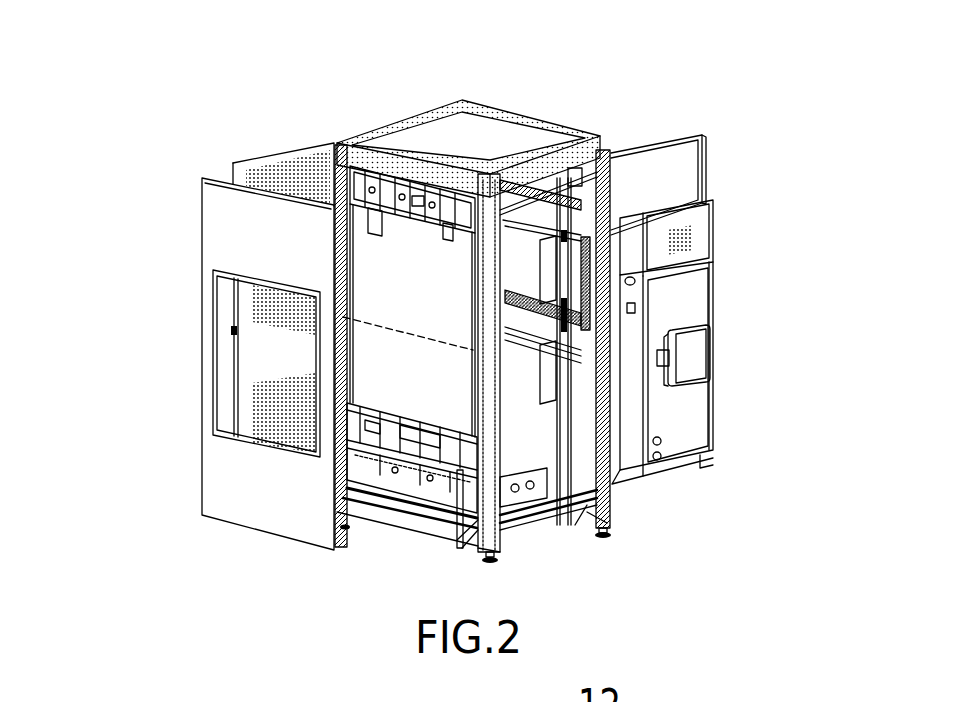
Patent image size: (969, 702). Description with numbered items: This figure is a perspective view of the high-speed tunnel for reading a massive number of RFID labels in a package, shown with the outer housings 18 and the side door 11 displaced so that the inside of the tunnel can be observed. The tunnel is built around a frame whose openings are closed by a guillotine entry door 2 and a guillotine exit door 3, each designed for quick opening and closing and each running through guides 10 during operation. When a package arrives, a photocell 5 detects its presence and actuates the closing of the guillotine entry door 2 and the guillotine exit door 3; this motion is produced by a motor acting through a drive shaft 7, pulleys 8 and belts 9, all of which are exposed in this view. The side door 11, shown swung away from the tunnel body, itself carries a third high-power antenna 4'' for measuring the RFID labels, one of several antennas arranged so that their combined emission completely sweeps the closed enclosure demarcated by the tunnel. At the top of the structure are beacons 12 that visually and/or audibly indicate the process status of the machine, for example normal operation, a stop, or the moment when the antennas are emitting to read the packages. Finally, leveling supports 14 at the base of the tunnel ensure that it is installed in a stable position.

The guillotine entry door 2 is at (368, 348).
The guillotine exit door 3 is at (535, 337).
The high-power antenna 4'' is at (737, 325).
The photocell 5 is at (517, 398).
The drive shaft 7 is at (563, 193).
The pulleys 8 is at (578, 172).
The belts 9 is at (560, 250).
The guides 10 is at (513, 282).
The side door 11 is at (711, 334).
The beacons 12 is at (380, 143).
The leveling supports 14 is at (490, 558).
The outer housings 18 is at (270, 167).